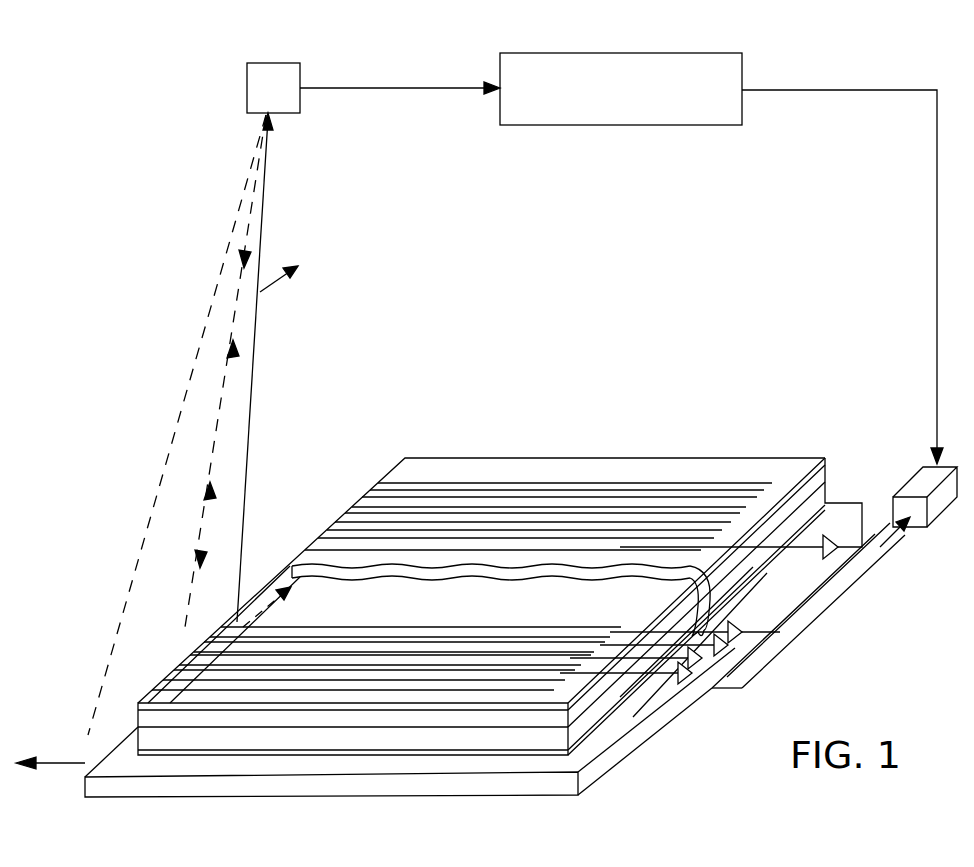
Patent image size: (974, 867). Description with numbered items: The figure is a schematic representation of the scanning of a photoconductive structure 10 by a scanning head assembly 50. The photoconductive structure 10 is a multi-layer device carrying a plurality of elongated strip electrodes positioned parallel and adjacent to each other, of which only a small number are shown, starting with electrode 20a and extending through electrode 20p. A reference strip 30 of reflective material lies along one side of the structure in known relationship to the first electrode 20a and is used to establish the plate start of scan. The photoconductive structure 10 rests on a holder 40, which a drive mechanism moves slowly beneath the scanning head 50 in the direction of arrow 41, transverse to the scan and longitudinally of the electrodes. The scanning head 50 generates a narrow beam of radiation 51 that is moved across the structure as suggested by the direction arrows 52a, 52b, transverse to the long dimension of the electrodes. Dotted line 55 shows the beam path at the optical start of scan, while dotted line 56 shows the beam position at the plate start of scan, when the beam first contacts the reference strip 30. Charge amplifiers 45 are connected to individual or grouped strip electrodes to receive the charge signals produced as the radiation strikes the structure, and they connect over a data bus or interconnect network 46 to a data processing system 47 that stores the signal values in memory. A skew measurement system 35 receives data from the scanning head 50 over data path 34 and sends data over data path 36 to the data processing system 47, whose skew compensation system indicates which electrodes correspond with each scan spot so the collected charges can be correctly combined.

The photoconductive structure 10 is at (780, 428).
The electrode 20a is at (180, 690).
The electrode 20p is at (397, 490).
The reference strip 30 is at (168, 690).
The data path 34 is at (438, 87).
The skew measurement system 35 is at (738, 52).
The data path 36 is at (787, 89).
The holder 40 is at (205, 797).
The arrow 41 is at (70, 768).
The charge amplifiers 45 is at (670, 708).
The data bus or interconnect network 46 is at (812, 628).
The data processing system 47 is at (930, 465).
The scanning head assembly 50 is at (300, 76).
The beam of radiation 51 is at (253, 352).
The direction arrow 52a is at (264, 286).
The direction arrow 52b is at (274, 612).
The dotted line 55 is at (217, 293).
The dotted line 56 is at (196, 597).